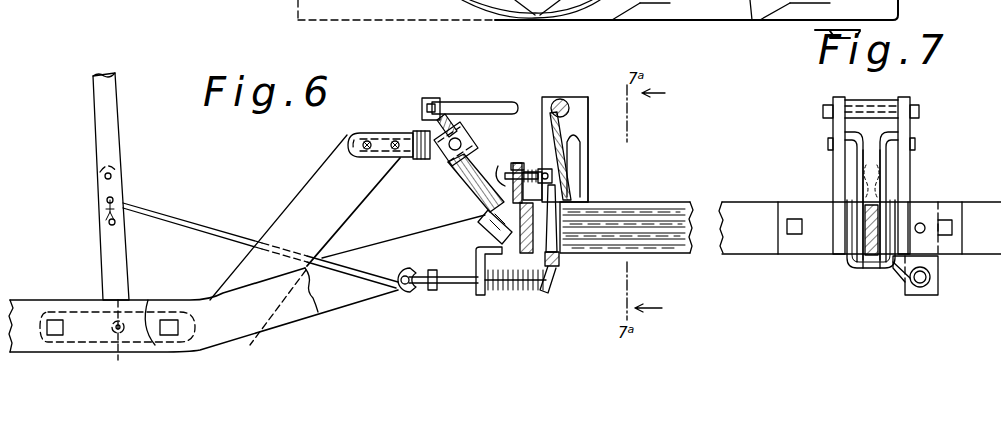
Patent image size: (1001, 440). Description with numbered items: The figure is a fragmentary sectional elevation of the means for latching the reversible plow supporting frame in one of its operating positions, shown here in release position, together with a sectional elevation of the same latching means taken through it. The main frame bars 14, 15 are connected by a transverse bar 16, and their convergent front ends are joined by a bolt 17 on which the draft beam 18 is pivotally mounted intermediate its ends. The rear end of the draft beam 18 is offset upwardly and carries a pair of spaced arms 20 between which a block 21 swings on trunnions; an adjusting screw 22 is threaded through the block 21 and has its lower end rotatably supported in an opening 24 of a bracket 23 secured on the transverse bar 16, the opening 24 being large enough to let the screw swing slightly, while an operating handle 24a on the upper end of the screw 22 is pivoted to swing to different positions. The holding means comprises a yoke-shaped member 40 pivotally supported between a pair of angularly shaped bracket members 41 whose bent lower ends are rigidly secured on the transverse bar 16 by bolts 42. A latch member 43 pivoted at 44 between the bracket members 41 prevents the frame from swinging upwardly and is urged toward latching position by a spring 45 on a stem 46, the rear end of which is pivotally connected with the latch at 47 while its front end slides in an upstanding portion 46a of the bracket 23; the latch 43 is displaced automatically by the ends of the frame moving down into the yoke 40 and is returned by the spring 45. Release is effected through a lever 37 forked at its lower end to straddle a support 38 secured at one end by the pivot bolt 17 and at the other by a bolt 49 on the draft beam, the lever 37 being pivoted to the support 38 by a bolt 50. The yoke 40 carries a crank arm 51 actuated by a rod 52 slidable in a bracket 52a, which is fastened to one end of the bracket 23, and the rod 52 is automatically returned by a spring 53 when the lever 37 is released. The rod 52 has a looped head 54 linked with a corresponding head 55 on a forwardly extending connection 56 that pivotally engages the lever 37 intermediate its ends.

In FIG. 6, the frame bar 14 is at (365, 256).
In FIG. 6, the frame bar 15 is at (300, 305).
In FIG. 6, the transverse bar 16 is at (556, 208).
In FIG. 7, the transverse bar 16 is at (747, 210).
In FIG. 6, the bolt 17 is at (168, 320).
In FIG. 6, the draft beam 18 is at (318, 196).
In FIG. 6, the spaced arms 20 is at (418, 159).
In FIG. 6, the block 21 is at (466, 150).
In FIG. 6, the adjusting screw 22 is at (460, 183).
In FIG. 6, the bracket 23 is at (470, 226).
In FIG. 6, the opening 24 is at (478, 222).
In FIG. 6, the operating handle 24a is at (482, 106).
In FIG. 6, the lever 37 is at (123, 262).
In FIG. 6, the support 38 is at (78, 312).
In FIG. 7, the support 38 is at (868, 255).
In FIG. 6, the yoke-shaped member 40 is at (575, 158).
In FIG. 7, the yoke-shaped member 40 is at (893, 175).
In FIG. 6, the bracket members 41 is at (588, 172).
In FIG. 7, the bracket members 41 is at (838, 163).
In FIG. 7, the bolts 42 is at (796, 235).
In FIG. 6, the latch member 43 is at (570, 128).
In FIG. 7, the latch member 43 is at (858, 132).
In FIG. 6, the pivot 44 is at (564, 100).
In FIG. 7, the pivot 44 is at (914, 108).
In FIG. 6, the spring 45 is at (522, 145).
In FIG. 6, the stem 46 is at (520, 162).
In FIG. 6, the upstanding portion 46a is at (490, 163).
In FIG. 6, the pivotal connection 47 is at (537, 184).
In FIG. 6, the bolt 49 is at (54, 320).
In FIG. 6, the bolt 50 is at (128, 334).
In FIG. 6, the crank arm 51 is at (552, 284).
In FIG. 7, the crank arm 51 is at (901, 278).
In FIG. 6, the rod 52 is at (455, 277).
In FIG. 7, the rod 52 is at (920, 284).
In FIG. 6, the bracket 52a is at (481, 297).
In FIG. 7, the bracket 52a is at (939, 284).
In FIG. 6, the spring 53 is at (531, 290).
In FIG. 6, the looped head 54 is at (432, 292).
In FIG. 6, the head 55 is at (403, 290).
In FIG. 6, the connection 56 is at (199, 224).